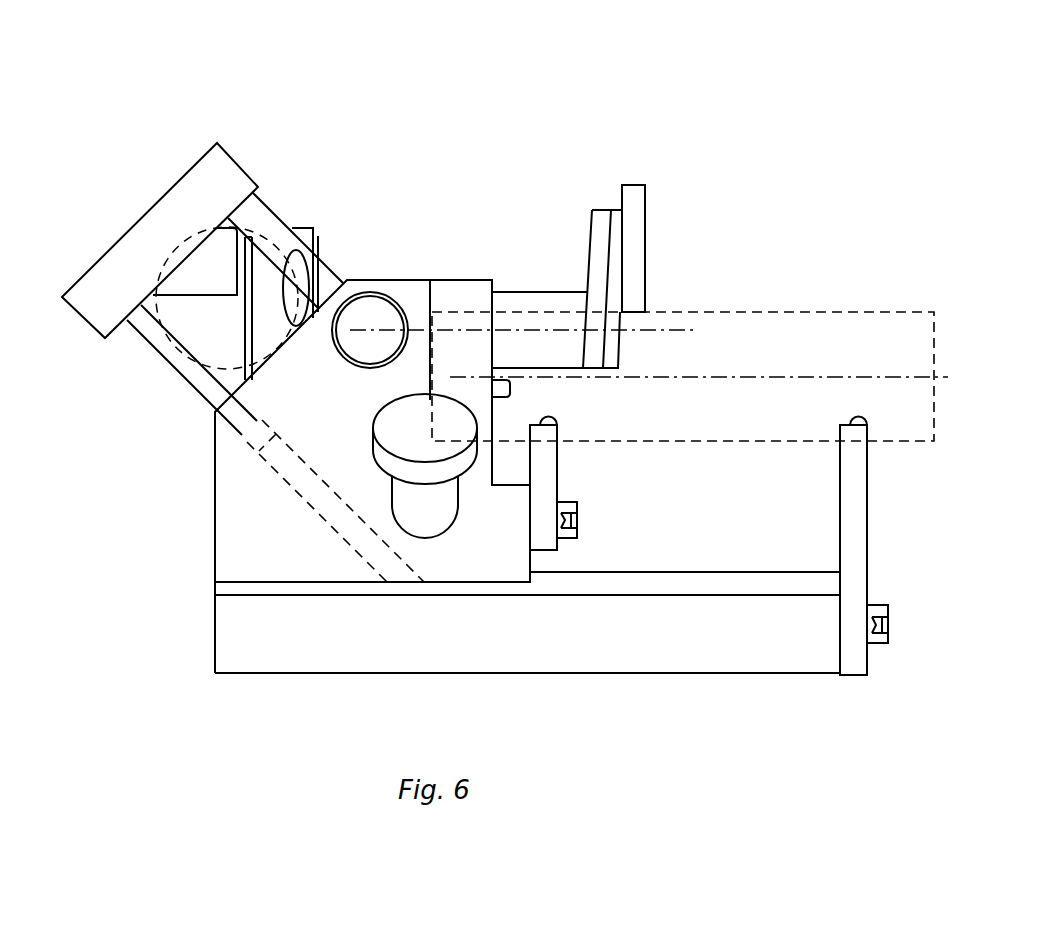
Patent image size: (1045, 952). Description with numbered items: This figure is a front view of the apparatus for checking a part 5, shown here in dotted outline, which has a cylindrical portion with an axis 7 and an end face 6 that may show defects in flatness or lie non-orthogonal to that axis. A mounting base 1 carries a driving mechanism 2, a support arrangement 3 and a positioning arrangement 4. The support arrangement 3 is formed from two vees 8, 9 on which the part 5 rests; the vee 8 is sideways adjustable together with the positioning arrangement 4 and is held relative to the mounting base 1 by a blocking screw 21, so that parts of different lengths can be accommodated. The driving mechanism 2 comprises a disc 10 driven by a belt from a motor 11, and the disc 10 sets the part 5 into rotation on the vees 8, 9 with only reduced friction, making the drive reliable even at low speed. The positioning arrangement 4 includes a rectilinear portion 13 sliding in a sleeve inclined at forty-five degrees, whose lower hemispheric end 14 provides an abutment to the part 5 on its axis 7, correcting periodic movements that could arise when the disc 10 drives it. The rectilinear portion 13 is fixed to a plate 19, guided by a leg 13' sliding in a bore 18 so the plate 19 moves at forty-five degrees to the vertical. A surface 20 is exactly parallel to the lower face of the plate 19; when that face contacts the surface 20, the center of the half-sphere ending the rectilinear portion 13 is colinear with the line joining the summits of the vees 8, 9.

The mounting base 1 is at (383, 652).
The driving mechanism 2 is at (527, 298).
The support arrangement 3 is at (767, 510).
The positioning arrangement 4 is at (238, 105).
The part 5 is at (271, 277).
The end face 6 is at (430, 385).
The axis 7 is at (832, 377).
The vee 8 is at (543, 472).
The vee 9 is at (855, 472).
The disc 10 is at (637, 242).
The motor 11 is at (223, 220).
The rectilinear portion 13 is at (285, 205).
The leg 13' is at (187, 370).
The hemispheric end 14 is at (392, 385).
The bore 18 is at (288, 470).
The plate 19 is at (169, 258).
The surface 20 is at (315, 255).
The blocking screw 21 is at (438, 522).